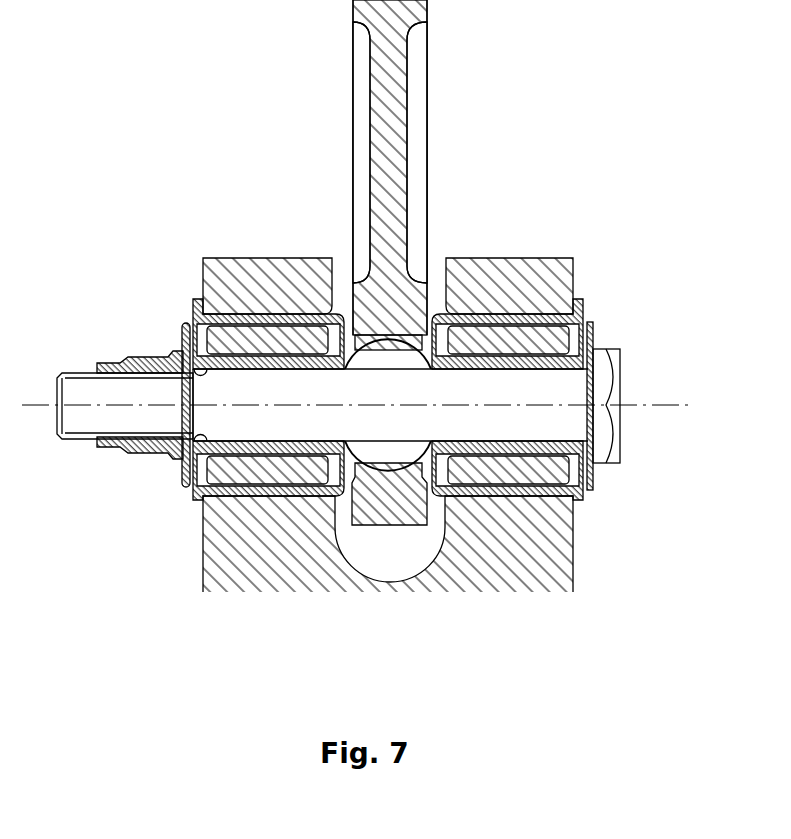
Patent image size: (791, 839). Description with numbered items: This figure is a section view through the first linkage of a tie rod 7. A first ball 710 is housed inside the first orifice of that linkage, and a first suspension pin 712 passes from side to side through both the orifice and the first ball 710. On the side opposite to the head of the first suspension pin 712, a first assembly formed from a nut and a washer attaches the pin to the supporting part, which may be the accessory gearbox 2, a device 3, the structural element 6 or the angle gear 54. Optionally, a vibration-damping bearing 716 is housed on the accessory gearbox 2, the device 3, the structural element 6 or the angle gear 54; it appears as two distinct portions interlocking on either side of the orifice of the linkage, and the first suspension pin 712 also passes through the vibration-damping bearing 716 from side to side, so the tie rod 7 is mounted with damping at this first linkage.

The accessory gearbox 2 is at (388, 462).
The device 3 is at (388, 462).
The structural element 6 is at (388, 462).
The angle gear 54 is at (240, 570).
The tie rod 7 is at (385, 143).
The first ball 710 is at (392, 458).
The first suspension pin 712 is at (574, 382).
The vibration-damping bearing 716 is at (584, 470).